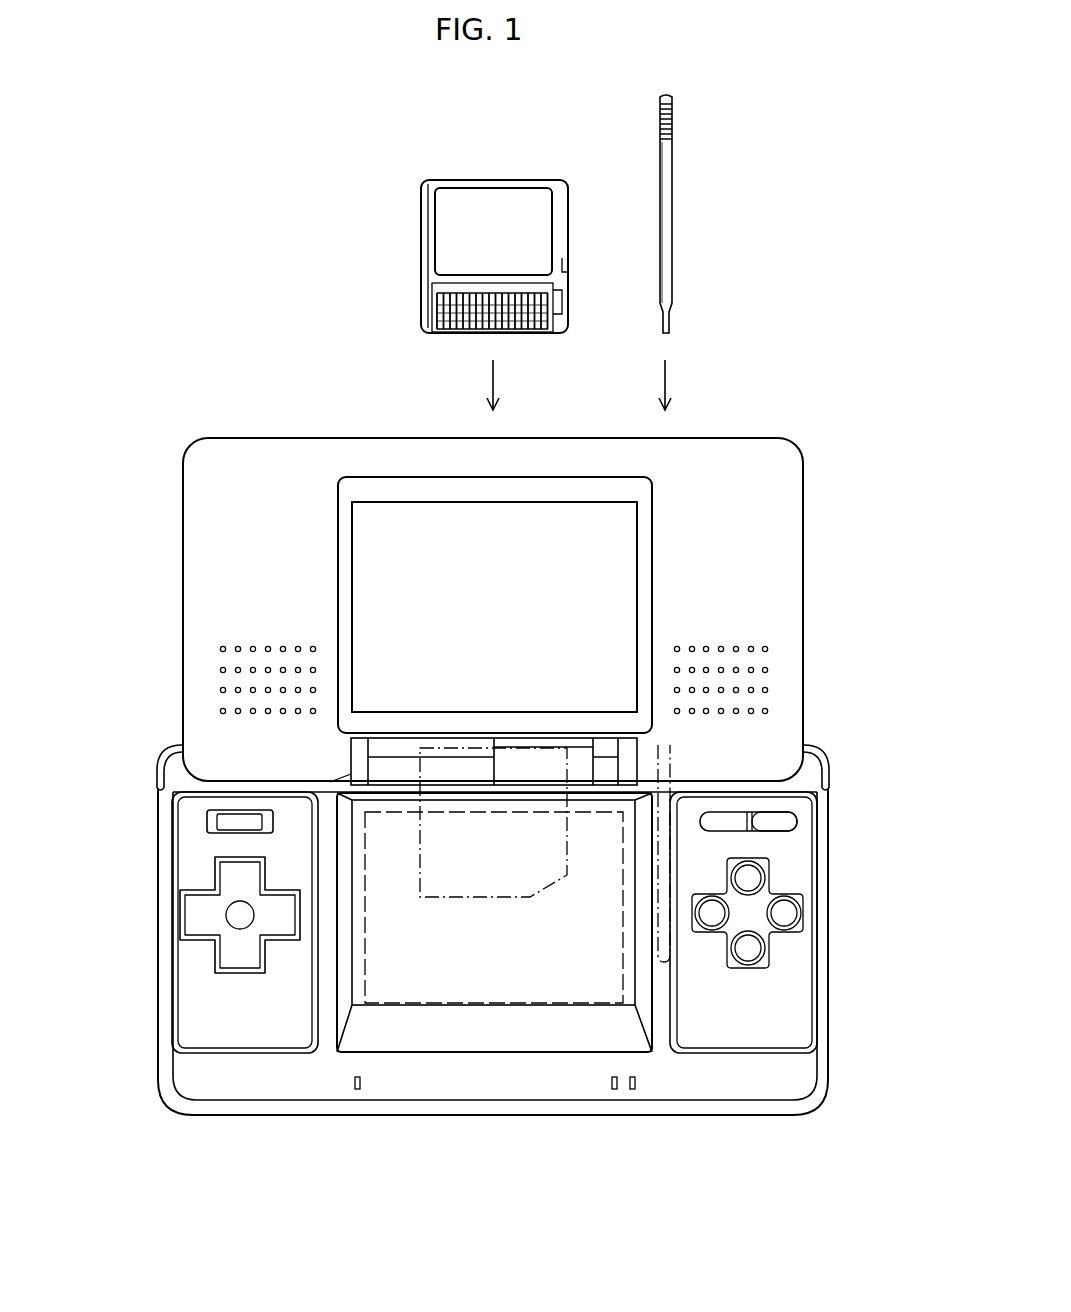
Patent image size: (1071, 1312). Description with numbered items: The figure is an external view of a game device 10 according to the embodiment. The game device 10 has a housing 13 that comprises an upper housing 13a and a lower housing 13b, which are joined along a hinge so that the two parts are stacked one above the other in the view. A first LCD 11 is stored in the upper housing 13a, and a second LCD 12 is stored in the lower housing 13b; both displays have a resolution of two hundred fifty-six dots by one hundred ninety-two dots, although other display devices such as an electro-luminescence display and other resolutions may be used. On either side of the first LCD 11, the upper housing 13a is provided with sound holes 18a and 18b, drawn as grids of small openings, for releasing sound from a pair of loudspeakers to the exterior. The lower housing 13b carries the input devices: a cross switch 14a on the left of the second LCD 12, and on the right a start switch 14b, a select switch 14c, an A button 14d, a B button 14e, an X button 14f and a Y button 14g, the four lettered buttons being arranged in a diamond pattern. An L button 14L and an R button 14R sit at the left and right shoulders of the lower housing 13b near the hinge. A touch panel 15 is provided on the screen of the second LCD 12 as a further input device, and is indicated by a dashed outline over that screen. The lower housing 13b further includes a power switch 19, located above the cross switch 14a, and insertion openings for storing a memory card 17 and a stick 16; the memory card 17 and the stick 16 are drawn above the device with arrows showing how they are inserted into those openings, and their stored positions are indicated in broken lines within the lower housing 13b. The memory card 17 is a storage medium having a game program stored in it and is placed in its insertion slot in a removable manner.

The game device 10 is at (207, 240).
The first LCD 11 is at (373, 525).
The second LCD 12 is at (537, 1007).
The housing 13 is at (782, 438).
The upper housing 13a is at (775, 578).
The lower housing 13b is at (185, 1013).
The L button 14L is at (157, 760).
The R button 14R is at (827, 745).
The cross switch 14a is at (187, 912).
The start switch 14b is at (797, 826).
The select switch 14c is at (737, 810).
The A button 14d is at (800, 913).
The B button 14e is at (767, 948).
The X button 14f is at (773, 880).
The Y button 14g is at (712, 932).
The touch panel 15 is at (396, 997).
The stick 16 is at (673, 142).
The memory card 17 is at (535, 180).
The sound hole 18a is at (223, 690).
The sound hole 18b is at (768, 650).
The power switch 19 is at (207, 815).